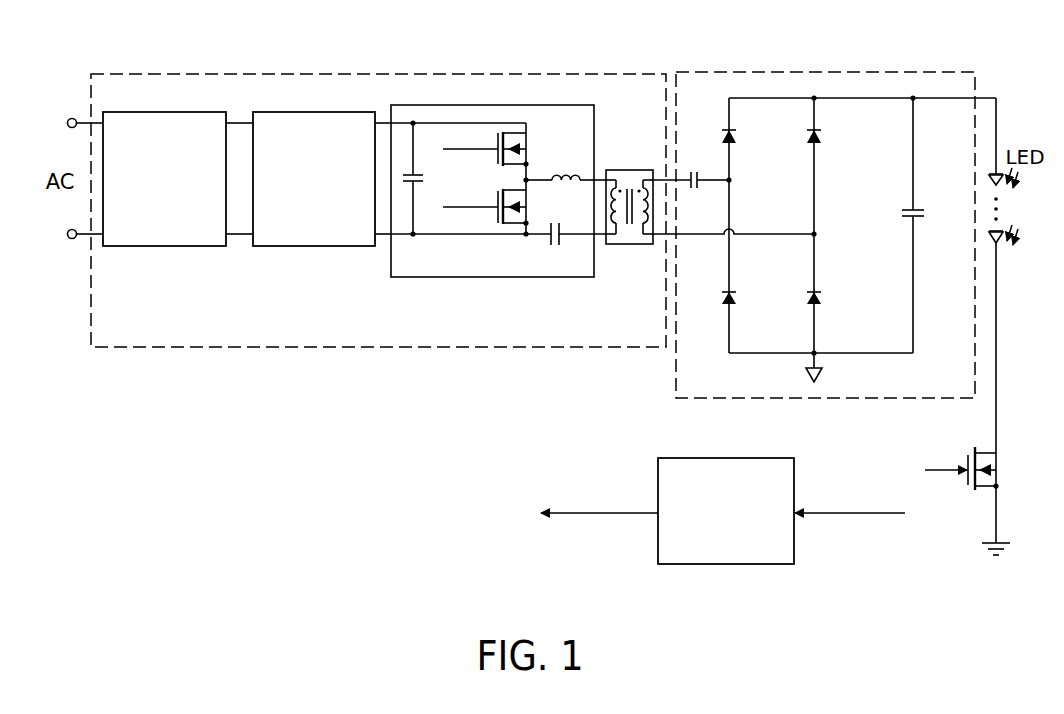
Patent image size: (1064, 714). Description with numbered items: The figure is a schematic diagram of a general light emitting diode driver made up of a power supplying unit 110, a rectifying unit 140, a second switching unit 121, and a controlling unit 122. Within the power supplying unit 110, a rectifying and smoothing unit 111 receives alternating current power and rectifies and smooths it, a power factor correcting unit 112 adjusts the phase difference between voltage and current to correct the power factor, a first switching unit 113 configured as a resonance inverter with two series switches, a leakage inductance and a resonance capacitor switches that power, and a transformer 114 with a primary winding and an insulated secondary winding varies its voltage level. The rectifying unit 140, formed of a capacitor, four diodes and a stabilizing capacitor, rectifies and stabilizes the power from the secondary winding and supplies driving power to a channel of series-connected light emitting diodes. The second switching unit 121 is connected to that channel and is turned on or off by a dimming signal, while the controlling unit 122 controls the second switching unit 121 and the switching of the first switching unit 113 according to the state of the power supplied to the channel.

The power supplying unit 110 is at (468, 72).
The rectifying and smoothing unit 111 is at (161, 248).
The power factor correcting unit 112 is at (311, 248).
The first switching unit 113 is at (536, 279).
The transformer 114 is at (637, 170).
The rectifying unit 140 is at (797, 70).
The second switching unit 121 is at (985, 493).
The controlling unit 122 is at (726, 566).